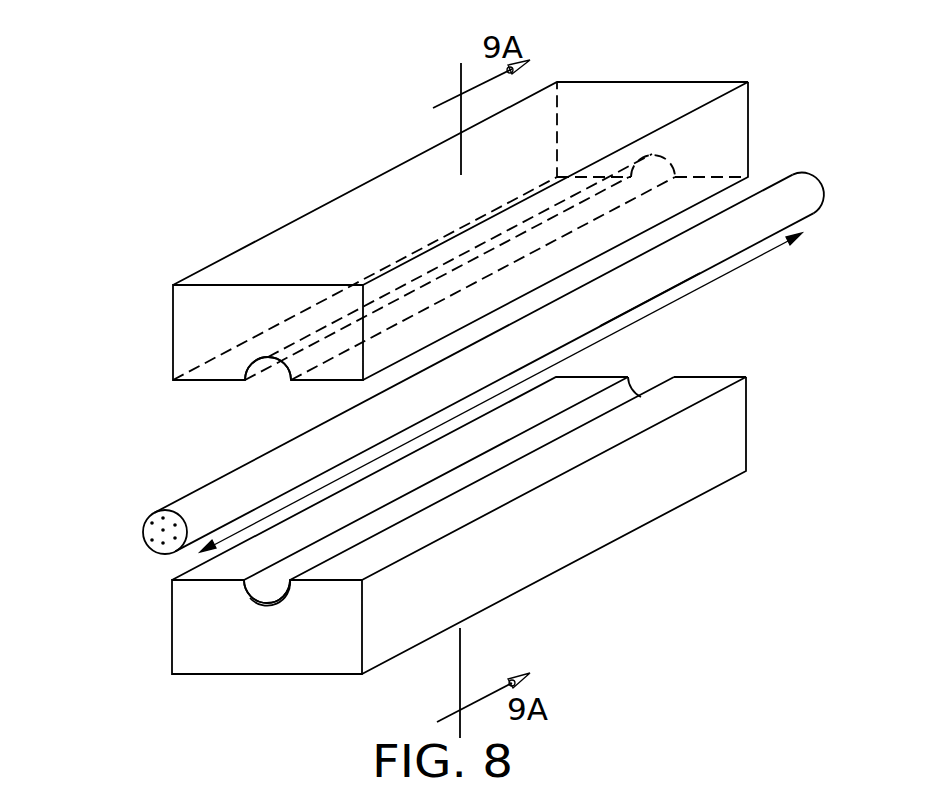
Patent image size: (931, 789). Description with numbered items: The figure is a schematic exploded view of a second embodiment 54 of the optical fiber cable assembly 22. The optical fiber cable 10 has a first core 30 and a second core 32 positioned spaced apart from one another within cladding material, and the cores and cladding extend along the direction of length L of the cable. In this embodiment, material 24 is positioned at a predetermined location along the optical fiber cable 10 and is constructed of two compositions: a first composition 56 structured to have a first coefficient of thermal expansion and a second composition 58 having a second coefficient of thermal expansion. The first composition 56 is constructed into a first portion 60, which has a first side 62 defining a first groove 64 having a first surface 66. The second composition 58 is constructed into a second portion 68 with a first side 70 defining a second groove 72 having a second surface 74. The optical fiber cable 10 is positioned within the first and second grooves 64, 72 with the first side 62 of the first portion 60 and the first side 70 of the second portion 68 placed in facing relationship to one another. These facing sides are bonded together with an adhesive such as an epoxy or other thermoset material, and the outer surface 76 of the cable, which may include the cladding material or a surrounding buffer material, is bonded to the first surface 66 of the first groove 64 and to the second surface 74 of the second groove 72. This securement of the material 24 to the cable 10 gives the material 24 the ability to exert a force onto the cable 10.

The optical fiber cable 10 is at (770, 213).
The optical fiber cable assembly 22 is at (553, 58).
The material 24 is at (218, 199).
The first core 30 is at (162, 530).
The second core 32 is at (162, 517).
The second embodiment 54 is at (306, 134).
The first composition 56 is at (190, 300).
The second composition 58 is at (188, 612).
The first portion 60 is at (640, 97).
The first side 62 is at (201, 382).
The first groove 64 is at (262, 390).
The first surface 66 is at (268, 355).
The second portion 68 is at (513, 570).
The first side 70 is at (392, 546).
The second groove 72 is at (258, 600).
The second surface 74 is at (262, 582).
The outer surface 76 is at (633, 280).
The length L is at (643, 318).